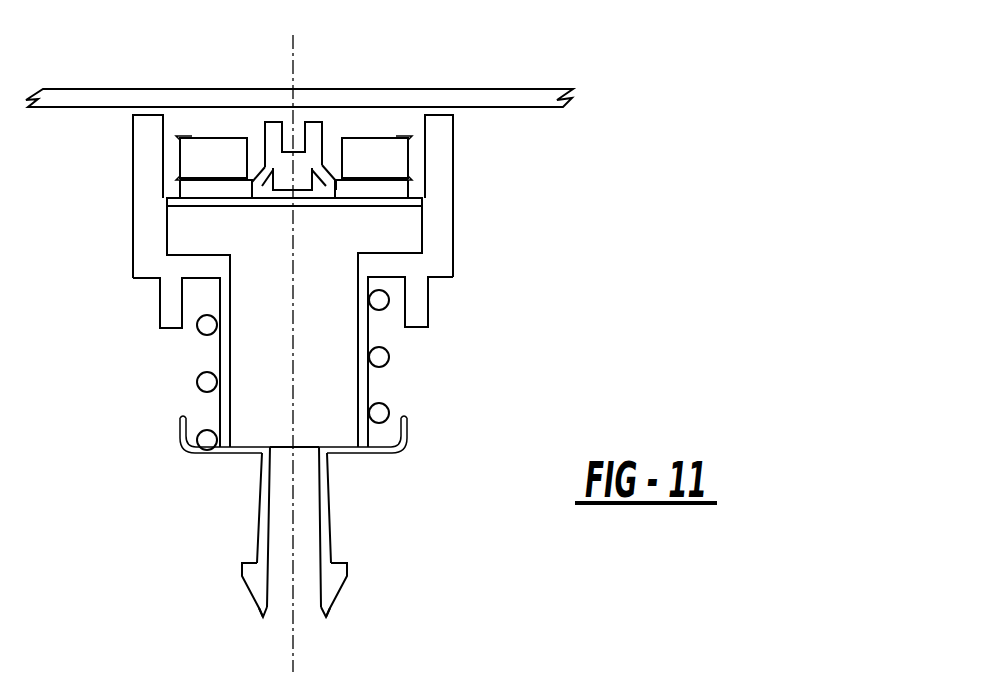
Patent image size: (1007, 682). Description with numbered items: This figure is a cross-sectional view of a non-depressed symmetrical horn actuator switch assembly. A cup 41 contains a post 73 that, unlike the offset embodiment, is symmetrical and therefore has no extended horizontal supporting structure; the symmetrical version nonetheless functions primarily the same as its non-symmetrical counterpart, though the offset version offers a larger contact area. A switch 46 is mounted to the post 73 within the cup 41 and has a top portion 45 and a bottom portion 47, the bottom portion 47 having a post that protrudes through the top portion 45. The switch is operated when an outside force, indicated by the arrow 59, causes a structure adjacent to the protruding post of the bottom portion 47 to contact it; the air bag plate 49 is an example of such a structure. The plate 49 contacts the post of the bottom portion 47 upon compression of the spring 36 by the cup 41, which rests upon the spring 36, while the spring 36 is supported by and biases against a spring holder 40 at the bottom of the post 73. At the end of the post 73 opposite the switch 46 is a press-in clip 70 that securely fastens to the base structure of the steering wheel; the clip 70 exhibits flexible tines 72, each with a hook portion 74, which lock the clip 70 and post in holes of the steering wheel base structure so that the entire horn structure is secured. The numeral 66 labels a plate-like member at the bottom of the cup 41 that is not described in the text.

The arrow 59 is at (158, 89).
The air bag plate 49 is at (507, 88).
The top portion 45 is at (215, 135).
The bottom portion 47 is at (328, 130).
The switch 46 is at (380, 127).
The base plate 66 is at (413, 198).
The cup 41 is at (453, 212).
The post 73 is at (310, 363).
The spring 36 is at (389, 355).
The spring holder 40 is at (182, 448).
The clip 70 is at (382, 481).
The hook portion 74 is at (240, 562).
The tines 72 is at (263, 617).